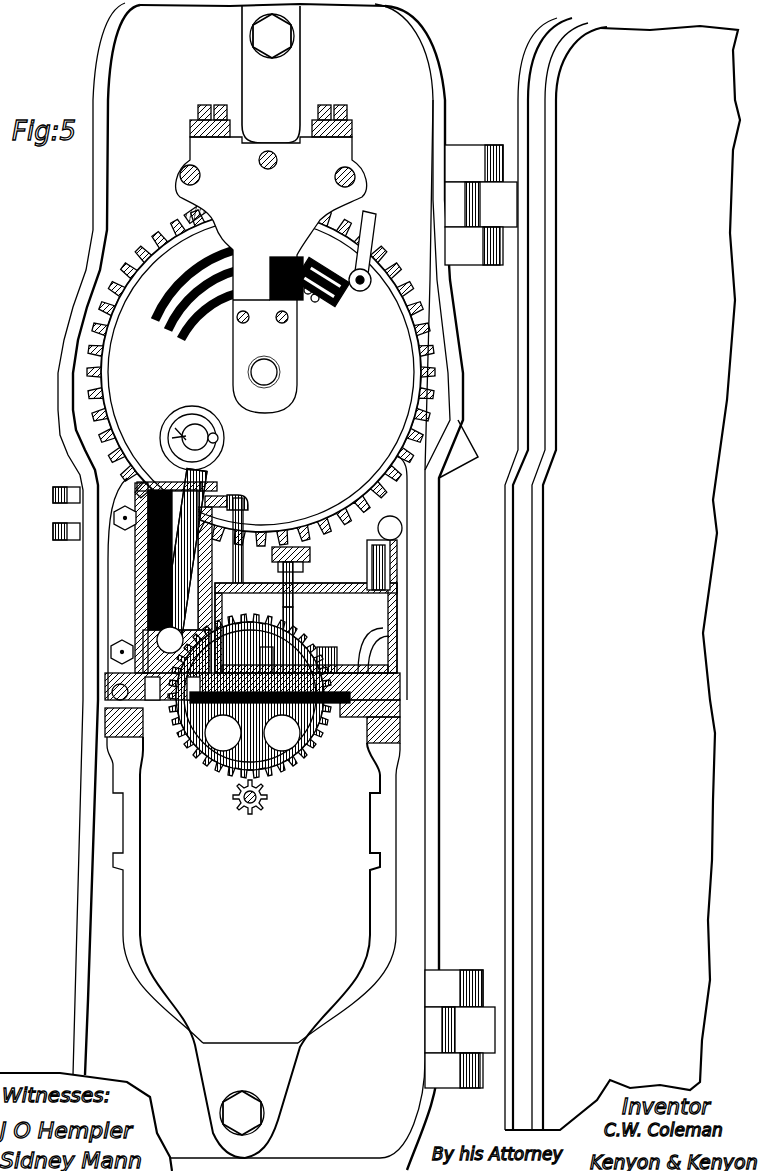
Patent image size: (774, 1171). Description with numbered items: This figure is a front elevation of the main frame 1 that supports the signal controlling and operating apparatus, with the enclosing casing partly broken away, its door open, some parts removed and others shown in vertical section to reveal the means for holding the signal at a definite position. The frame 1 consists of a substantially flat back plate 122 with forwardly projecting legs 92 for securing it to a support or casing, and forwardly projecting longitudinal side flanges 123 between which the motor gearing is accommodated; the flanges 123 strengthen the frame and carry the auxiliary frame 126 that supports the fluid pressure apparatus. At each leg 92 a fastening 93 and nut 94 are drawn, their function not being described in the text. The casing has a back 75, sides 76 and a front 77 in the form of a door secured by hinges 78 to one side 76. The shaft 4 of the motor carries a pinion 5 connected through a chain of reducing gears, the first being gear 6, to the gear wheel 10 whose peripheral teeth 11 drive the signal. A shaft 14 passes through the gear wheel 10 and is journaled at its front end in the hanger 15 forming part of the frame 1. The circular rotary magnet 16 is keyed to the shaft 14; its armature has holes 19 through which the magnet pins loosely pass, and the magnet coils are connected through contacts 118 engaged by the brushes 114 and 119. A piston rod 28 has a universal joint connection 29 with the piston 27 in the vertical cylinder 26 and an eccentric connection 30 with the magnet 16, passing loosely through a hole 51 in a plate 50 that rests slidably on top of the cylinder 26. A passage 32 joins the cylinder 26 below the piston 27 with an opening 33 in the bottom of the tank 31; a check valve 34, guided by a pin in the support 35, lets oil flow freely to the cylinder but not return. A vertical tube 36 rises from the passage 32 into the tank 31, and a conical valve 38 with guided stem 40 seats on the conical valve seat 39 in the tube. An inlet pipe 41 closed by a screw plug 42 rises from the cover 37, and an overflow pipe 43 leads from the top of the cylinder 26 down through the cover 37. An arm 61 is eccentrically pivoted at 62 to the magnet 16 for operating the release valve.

The main frame 1 is at (343, 1010).
The shaft of motor 4 is at (245, 805).
The pinion 5 is at (262, 810).
The reducing gear 6 is at (322, 745).
The gear wheel 10 is at (152, 258).
The peripheral teeth 11 is at (188, 213).
The shaft 14 is at (278, 372).
The hanger 15 is at (271, 259).
The rotary magnet 16 is at (415, 385).
The holes 19 is at (68, 492).
The vertical cylinder 26 is at (135, 590).
The piston 27 is at (113, 690).
The piston rod 28 is at (210, 470).
The universal joint connection 29 is at (157, 640).
The eccentric connection 30 is at (172, 428).
The tank 31 is at (306, 628).
The passage 32 is at (195, 757).
The opening 33 is at (305, 672).
The check valve 34 is at (372, 662).
The support 35 is at (400, 690).
The vertical tube 36 is at (282, 622).
The cover 37 is at (322, 588).
The conical valve 38 is at (300, 705).
The conical valve seat 39 is at (260, 722).
The valve stem 40 is at (283, 600).
The inlet pipe 41 is at (396, 566).
The screw plug 42 is at (392, 548).
The overflow pipe 43 is at (245, 520).
The plate 50 is at (222, 488).
The hole 51 is at (165, 482).
The arm 61 is at (372, 237).
The pivot 62 is at (360, 292).
The back of casing 75 is at (350, 1080).
The sides of casing 76 is at (80, 855).
The front of casing 77 is at (622, 574).
The hinges 78 is at (485, 160).
The projecting legs 92 is at (251, 541).
The flange 93 is at (243, 14).
The nut 94 is at (257, 574).
The brush 114 is at (325, 268).
The contacts 118 is at (178, 333).
The brush 119 is at (312, 305).
The back plate 122 is at (190, 968).
The side flanges 123 is at (105, 897).
The auxiliary frame 126 is at (118, 557).